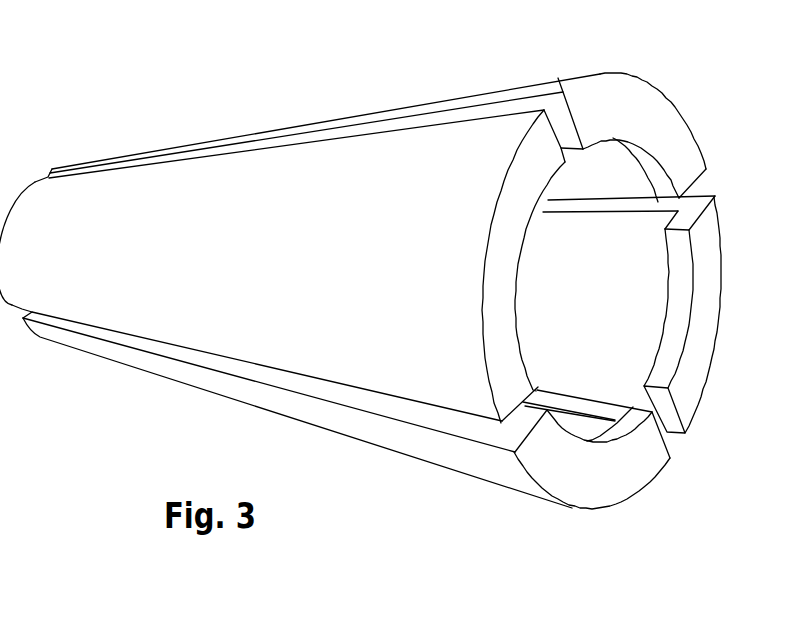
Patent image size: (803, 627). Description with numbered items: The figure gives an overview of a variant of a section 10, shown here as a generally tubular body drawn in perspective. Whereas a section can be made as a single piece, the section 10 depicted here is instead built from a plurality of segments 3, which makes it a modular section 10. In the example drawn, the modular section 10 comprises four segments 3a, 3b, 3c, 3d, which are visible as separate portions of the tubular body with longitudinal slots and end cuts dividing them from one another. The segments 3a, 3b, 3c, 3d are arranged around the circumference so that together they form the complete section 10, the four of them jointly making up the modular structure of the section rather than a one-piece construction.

The section 10 is at (171, 126).
The segments 3 is at (295, 345).
The first segment 3a is at (548, 90).
The second segment 3b is at (710, 313).
The third segment 3c is at (592, 491).
The fourth segment 3d is at (432, 157).